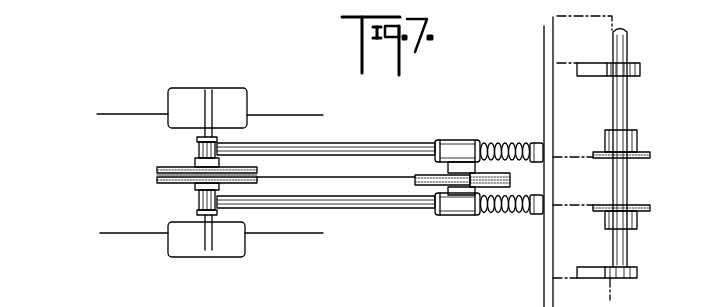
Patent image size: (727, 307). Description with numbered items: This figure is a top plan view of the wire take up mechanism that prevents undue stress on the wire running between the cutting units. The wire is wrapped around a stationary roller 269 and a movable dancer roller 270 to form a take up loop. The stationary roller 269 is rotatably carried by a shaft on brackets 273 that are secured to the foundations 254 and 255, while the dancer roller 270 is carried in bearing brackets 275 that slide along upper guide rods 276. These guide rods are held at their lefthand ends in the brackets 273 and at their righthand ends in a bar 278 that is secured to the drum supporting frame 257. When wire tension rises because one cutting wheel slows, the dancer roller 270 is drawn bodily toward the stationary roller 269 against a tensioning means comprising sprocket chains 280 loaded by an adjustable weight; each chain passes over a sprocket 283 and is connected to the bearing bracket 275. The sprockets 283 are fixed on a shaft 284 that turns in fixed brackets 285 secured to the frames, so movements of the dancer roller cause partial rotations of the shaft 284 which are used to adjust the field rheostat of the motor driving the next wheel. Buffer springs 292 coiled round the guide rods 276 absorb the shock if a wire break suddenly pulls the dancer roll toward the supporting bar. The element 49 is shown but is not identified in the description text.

The rod 49 is at (346, 177).
The foundation 254 is at (135, 235).
The foundation 255 is at (119, 113).
The drum supporting frame 257 is at (598, 17).
The stationary roller 269 is at (157, 176).
The dancer roller 270 is at (414, 181).
The bracket 273 is at (206, 106).
The bearing bracket 275 is at (465, 131).
The upper guide rod 276 is at (388, 134).
The bar 278 is at (544, 58).
The sprocket chain 280 is at (565, 160).
The sprocket 283 is at (653, 156).
The shaft 284 is at (628, 248).
The fixed bracket 285 is at (640, 71).
The buffer spring 292 is at (502, 143).